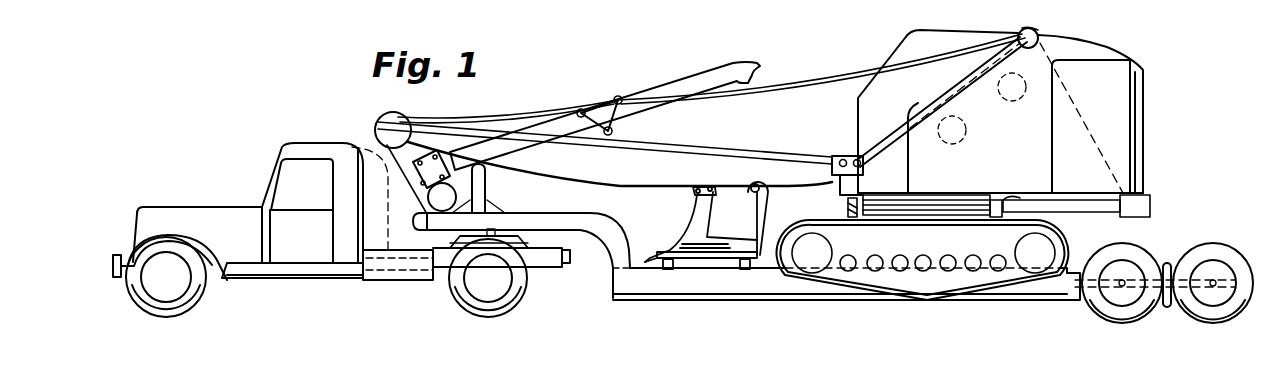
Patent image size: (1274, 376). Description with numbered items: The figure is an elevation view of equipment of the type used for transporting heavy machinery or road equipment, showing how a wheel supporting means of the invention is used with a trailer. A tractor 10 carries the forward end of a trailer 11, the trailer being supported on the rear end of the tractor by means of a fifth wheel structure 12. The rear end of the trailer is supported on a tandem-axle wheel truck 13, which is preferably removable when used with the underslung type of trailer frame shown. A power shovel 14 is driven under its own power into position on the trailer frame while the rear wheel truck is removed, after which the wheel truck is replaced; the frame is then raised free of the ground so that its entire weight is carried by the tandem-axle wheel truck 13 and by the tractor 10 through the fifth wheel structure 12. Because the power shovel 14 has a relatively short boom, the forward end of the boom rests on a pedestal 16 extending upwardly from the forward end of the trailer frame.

The tractor 10 is at (345, 270).
The trailer 11 is at (767, 283).
The fifth wheel structure 12 is at (520, 247).
The tandem-axle wheel truck 13 is at (1140, 253).
The power shovel 14 is at (1117, 102).
The pedestal 16 is at (480, 173).